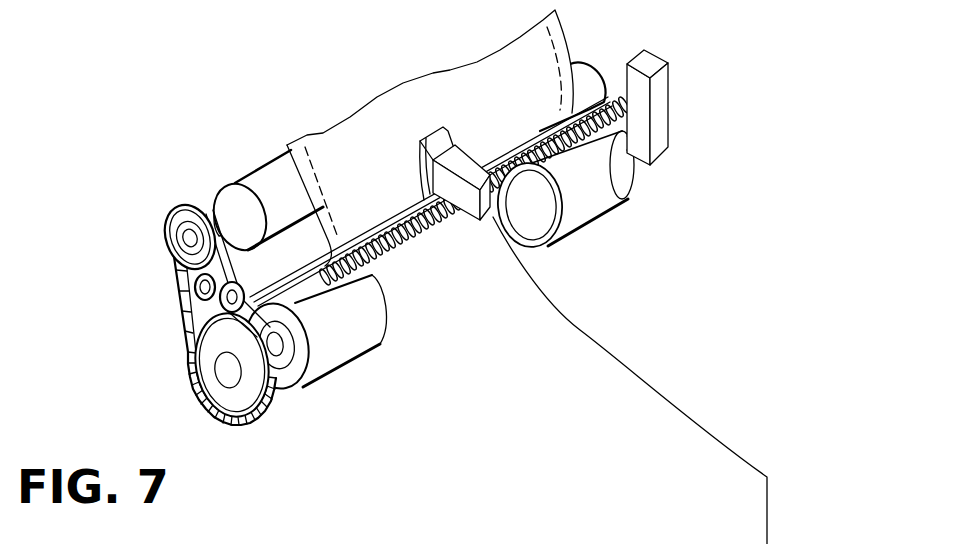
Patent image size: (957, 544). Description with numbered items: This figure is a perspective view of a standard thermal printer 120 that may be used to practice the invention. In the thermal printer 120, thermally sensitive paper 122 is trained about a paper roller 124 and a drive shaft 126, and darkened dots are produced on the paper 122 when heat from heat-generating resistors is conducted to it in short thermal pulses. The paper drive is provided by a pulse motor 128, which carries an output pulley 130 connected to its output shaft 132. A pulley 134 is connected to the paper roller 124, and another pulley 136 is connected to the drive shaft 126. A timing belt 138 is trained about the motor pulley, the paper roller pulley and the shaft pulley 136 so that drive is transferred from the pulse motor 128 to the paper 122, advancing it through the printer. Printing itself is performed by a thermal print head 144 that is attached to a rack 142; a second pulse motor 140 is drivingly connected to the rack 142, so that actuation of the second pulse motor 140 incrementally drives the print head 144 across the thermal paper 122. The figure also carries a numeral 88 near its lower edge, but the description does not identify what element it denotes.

The thermal printer 120 is at (722, 162).
The thermally sensitive paper 122 is at (320, 132).
The paper roller 124 is at (222, 183).
The drive shaft 126 is at (190, 303).
The pulse motor 128 is at (368, 348).
The output pulley 130 is at (210, 356).
The output shaft 132 is at (237, 387).
The pulley 134 is at (175, 228).
The shaft pulley 136 is at (192, 330).
The timing belt 138 is at (178, 265).
The second pulse motor 140 is at (600, 218).
The rack 142 is at (611, 106).
The thermal print head 144 is at (445, 135).
The print head 88 is at (478, 543).